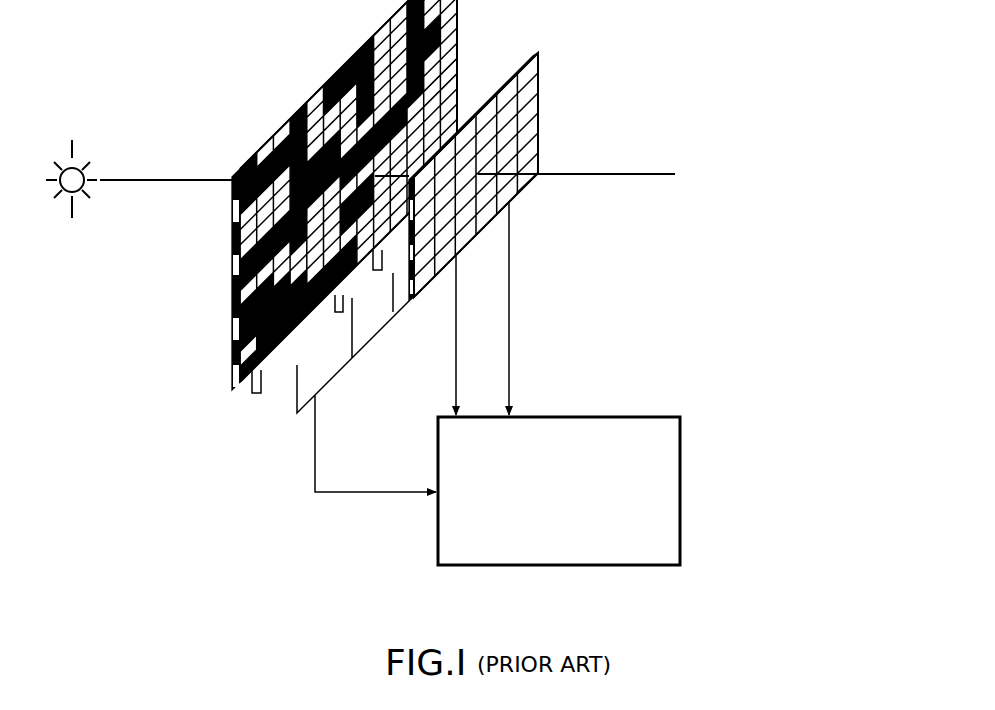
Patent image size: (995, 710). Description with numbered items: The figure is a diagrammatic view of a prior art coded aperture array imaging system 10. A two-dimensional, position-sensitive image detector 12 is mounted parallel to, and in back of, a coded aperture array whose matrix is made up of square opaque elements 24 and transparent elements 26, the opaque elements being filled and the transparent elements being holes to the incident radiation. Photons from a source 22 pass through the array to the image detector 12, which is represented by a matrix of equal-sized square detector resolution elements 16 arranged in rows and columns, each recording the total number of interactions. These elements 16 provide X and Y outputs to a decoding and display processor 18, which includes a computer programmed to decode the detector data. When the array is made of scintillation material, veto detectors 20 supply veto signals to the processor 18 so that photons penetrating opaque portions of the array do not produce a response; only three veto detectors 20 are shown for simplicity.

The system 10 is at (178, 373).
The image detector 12 is at (545, 68).
The detector resolution element 16 is at (527, 180).
The decoding and display processor 18 is at (665, 417).
The veto detectors 20 is at (270, 378).
The source 22 is at (80, 192).
The opaque element 24 is at (314, 195).
The transparent element 26 is at (232, 283).